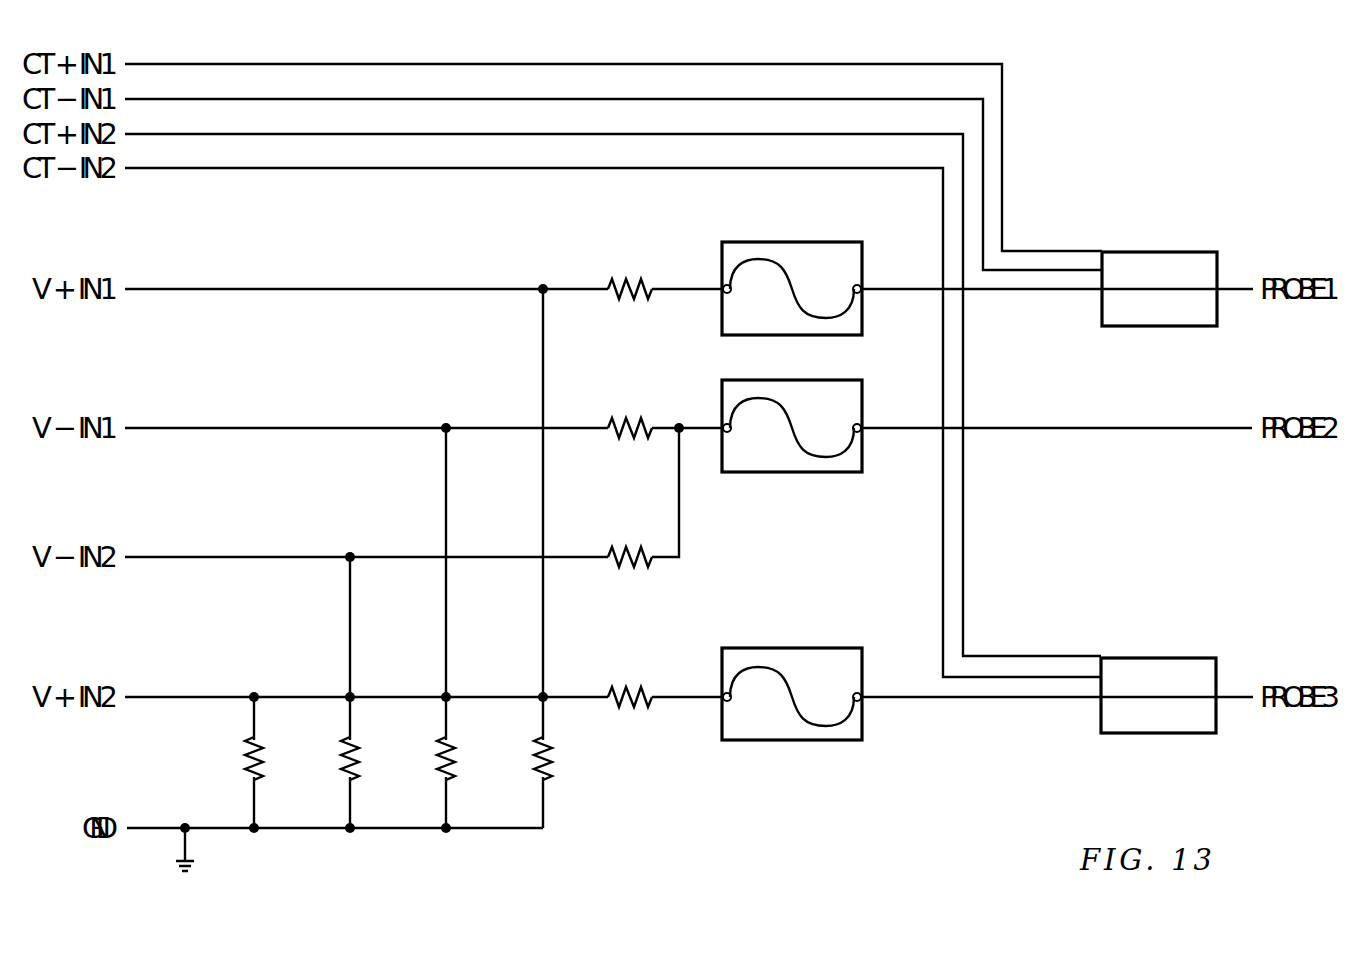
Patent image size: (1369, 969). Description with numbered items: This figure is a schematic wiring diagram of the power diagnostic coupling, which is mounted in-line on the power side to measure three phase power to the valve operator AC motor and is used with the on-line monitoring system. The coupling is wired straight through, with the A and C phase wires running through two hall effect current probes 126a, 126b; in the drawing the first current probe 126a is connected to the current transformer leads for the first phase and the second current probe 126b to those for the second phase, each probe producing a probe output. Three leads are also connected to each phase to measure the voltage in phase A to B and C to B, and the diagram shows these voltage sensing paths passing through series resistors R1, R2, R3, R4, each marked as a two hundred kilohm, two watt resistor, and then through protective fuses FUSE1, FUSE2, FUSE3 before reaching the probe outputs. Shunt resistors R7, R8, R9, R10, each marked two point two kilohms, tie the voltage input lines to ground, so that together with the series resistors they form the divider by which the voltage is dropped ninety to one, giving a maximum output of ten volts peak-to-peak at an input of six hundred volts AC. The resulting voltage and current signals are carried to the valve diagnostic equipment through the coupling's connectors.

The hall effect current probe 126a is at (1217, 264).
The hall effect current probe 126b is at (1216, 671).
The resistor R1 200K 2W R1 is at (629, 274).
The resistor R2 200K 2W R2 is at (629, 413).
The resistor R3 200K 2W R3 is at (629, 543).
The resistor R4 200K 2W R4 is at (629, 685).
The resistor R7 2.2K R7 is at (277, 752).
The resistor R8 2.2K R8 is at (373, 752).
The resistor R9 2.2K R9 is at (469, 752).
The resistor R10 2.2K R10 is at (566, 752).
The fuse 1 FUSE1 is at (792, 268).
The fuse 2 FUSE2 is at (792, 406).
The fuse 3 FUSE3 is at (792, 674).